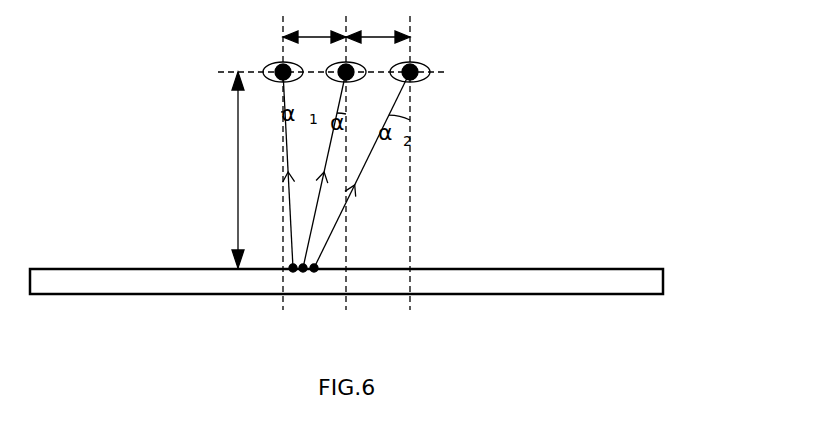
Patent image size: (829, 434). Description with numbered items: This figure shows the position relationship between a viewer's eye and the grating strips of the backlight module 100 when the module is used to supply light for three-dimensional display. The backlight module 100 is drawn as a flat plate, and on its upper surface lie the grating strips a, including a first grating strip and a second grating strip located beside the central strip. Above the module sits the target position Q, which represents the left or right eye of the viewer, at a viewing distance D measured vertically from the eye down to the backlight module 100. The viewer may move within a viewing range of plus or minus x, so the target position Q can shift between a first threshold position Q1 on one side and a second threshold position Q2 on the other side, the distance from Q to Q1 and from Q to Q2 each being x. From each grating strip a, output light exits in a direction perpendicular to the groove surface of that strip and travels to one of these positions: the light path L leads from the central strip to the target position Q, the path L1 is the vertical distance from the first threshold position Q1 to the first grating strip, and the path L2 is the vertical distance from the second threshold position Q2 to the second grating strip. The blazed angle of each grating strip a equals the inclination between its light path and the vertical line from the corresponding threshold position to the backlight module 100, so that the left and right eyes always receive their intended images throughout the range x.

The backlight module 100 is at (93, 281).
The target position Q is at (348, 85).
The first threshold position Q1 is at (291, 86).
The second threshold position Q2 is at (418, 86).
The vertical distance from target position to grating strip L is at (324, 170).
The vertical distance from first threshold position to first grating strip L1 is at (296, 170).
The vertical distance from second threshold position to second grating strip L2 is at (362, 170).
The viewing distance D is at (229, 170).
The viewing range offset x is at (346, 28).
The grating strip a is at (315, 272).